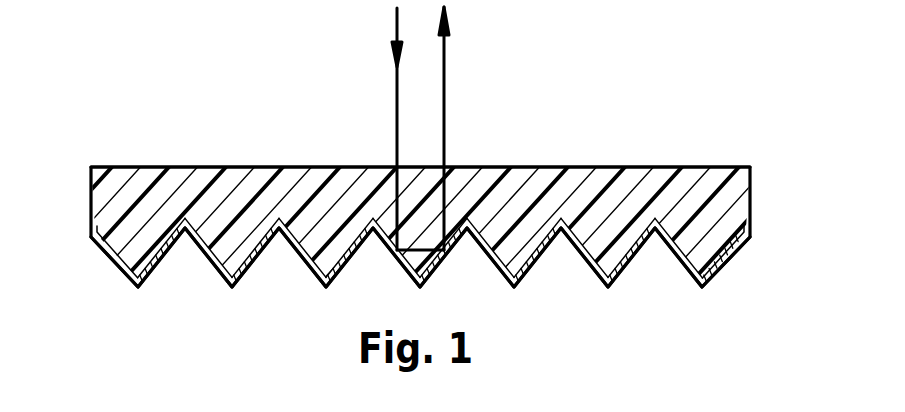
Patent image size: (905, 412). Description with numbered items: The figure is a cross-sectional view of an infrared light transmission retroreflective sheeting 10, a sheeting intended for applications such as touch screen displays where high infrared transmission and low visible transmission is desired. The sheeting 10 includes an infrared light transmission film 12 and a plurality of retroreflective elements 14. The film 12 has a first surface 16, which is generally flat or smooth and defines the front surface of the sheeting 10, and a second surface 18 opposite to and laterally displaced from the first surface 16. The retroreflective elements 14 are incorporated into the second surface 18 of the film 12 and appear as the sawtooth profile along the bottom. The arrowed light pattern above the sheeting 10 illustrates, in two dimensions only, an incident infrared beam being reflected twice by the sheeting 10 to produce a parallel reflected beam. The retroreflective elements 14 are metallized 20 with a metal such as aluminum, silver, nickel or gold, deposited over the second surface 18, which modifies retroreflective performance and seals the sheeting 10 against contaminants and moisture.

The infrared light transmission retroreflective sheeting 10 is at (610, 131).
The infrared light transmission film 12 is at (750, 188).
The retroreflective elements 14 is at (160, 293).
The first surface 16 is at (178, 167).
The second surface 18 is at (110, 256).
The metallization 20 is at (722, 268).